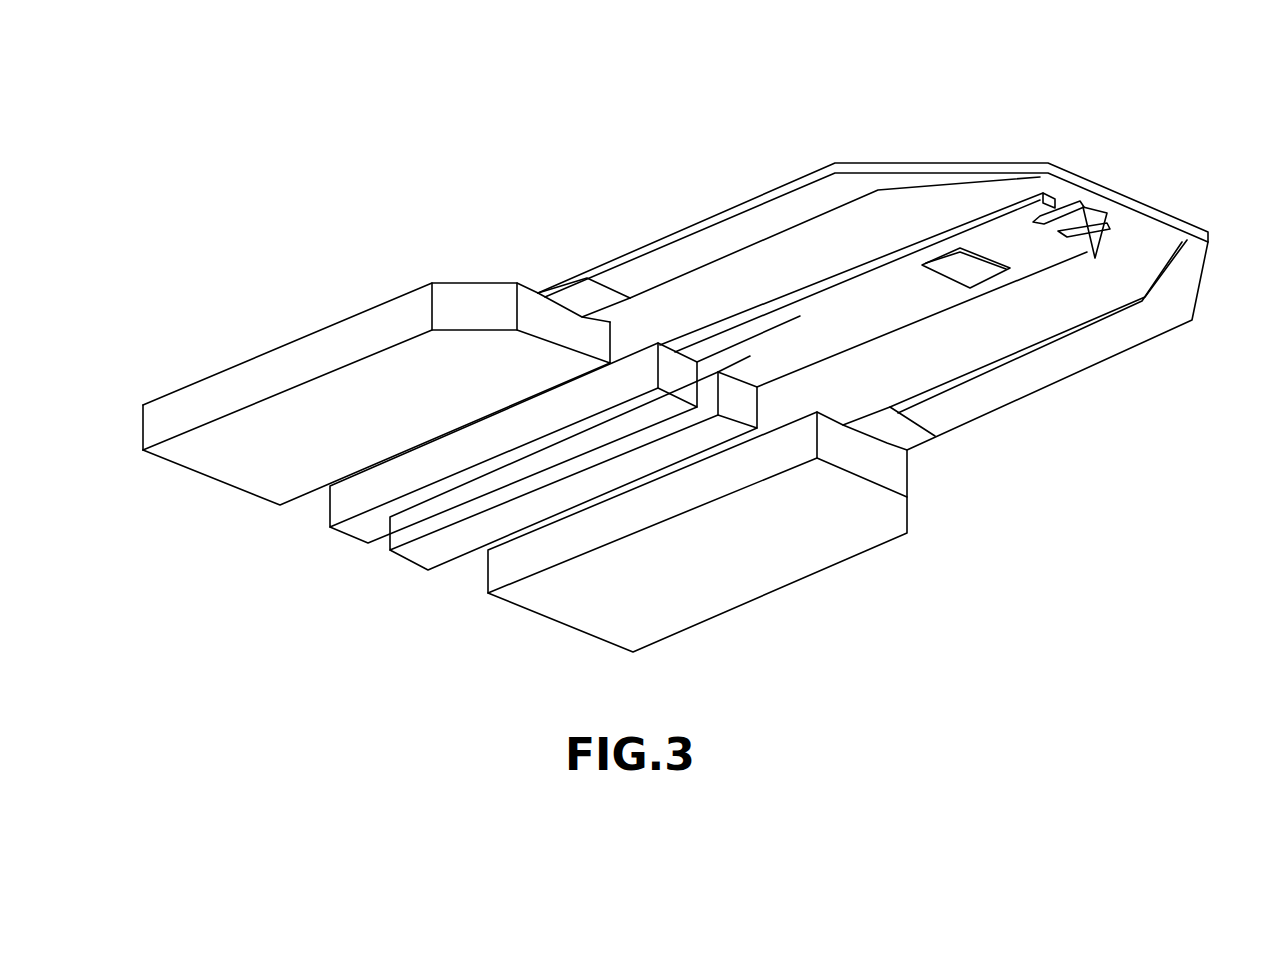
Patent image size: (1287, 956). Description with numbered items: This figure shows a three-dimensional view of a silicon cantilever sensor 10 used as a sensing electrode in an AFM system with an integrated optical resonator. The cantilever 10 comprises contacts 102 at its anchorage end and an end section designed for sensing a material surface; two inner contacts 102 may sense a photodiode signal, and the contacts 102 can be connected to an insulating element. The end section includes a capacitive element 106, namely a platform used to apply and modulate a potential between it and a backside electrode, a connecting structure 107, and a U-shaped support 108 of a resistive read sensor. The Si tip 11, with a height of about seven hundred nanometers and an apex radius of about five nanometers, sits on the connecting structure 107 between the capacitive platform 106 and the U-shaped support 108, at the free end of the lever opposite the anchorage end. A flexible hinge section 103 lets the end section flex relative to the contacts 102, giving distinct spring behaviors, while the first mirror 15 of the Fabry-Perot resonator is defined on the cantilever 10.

The cantilever 10 is at (702, 370).
The Si tip 11 is at (1093, 250).
The first mirror 15 is at (975, 268).
The contacts 102 is at (530, 612).
The flexible hinge section 103 is at (577, 298).
The capacitive element 106 is at (882, 257).
The connecting structure 107 is at (1065, 213).
The U-shaped support 108 is at (932, 163).